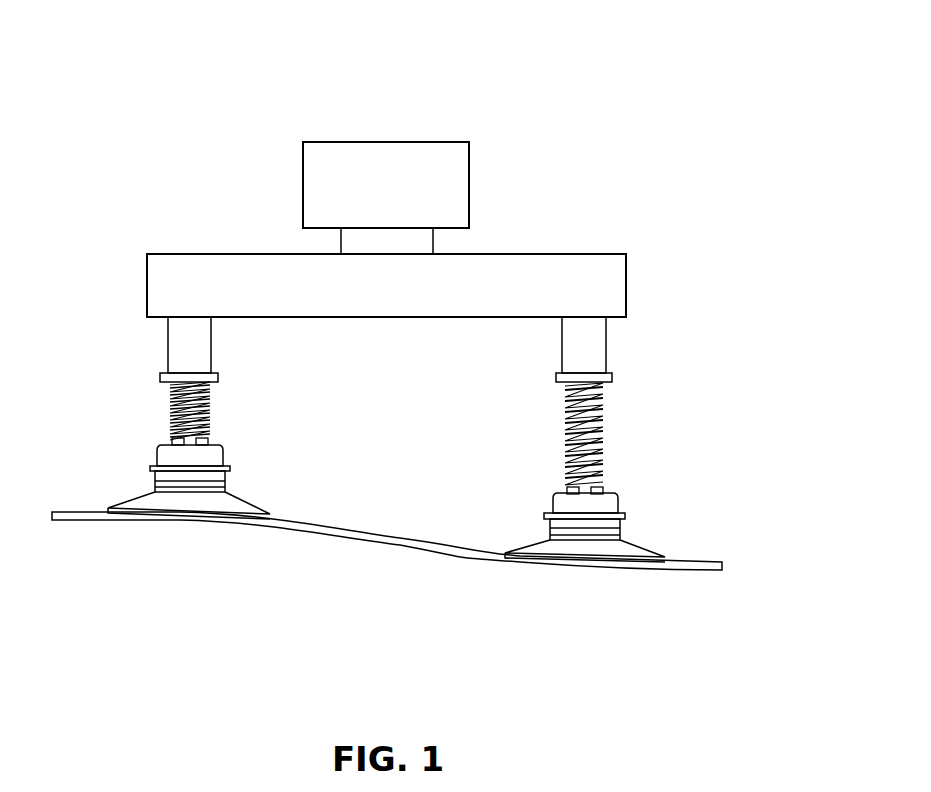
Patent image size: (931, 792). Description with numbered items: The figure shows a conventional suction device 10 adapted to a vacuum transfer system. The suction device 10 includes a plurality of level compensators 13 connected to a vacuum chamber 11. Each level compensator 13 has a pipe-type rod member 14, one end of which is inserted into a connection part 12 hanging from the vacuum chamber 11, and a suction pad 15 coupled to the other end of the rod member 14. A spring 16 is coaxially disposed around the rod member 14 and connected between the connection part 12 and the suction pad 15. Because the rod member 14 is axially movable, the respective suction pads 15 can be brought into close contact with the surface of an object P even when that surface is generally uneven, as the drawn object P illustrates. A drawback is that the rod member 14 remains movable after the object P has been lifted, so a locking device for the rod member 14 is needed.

The suction device 10 is at (549, 98).
The vacuum chamber 11 is at (553, 254).
The connection part 12 is at (607, 355).
The level compensator 13 is at (148, 422).
The rod member 14 is at (603, 418).
The suction pad 15 is at (620, 505).
The spring 16 is at (601, 460).
The object P is at (372, 546).